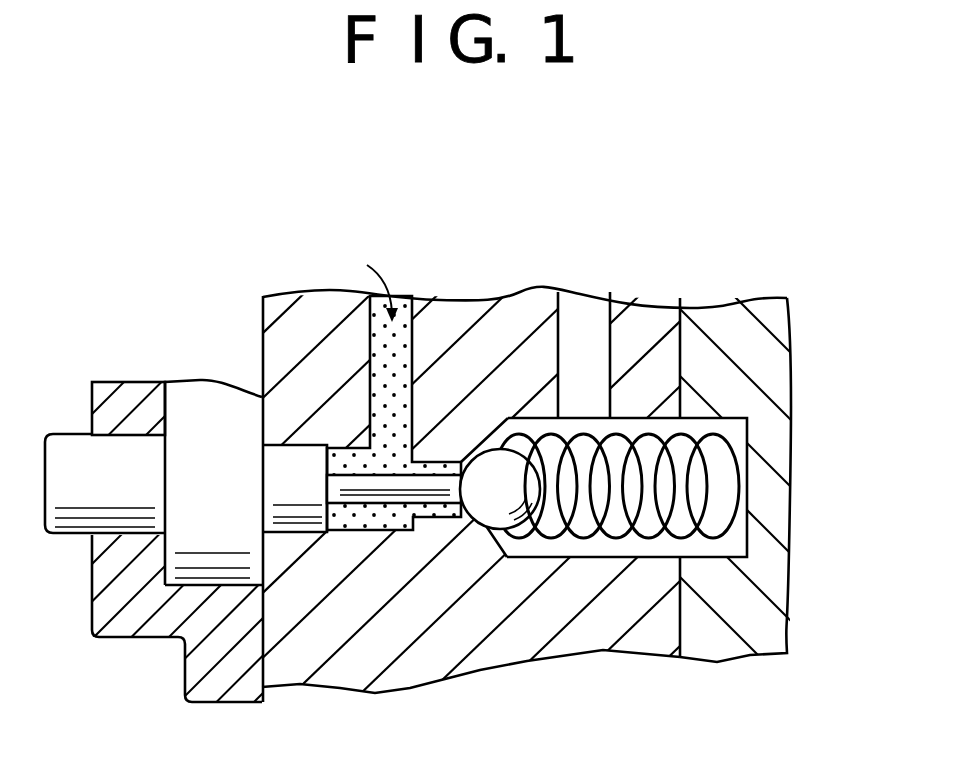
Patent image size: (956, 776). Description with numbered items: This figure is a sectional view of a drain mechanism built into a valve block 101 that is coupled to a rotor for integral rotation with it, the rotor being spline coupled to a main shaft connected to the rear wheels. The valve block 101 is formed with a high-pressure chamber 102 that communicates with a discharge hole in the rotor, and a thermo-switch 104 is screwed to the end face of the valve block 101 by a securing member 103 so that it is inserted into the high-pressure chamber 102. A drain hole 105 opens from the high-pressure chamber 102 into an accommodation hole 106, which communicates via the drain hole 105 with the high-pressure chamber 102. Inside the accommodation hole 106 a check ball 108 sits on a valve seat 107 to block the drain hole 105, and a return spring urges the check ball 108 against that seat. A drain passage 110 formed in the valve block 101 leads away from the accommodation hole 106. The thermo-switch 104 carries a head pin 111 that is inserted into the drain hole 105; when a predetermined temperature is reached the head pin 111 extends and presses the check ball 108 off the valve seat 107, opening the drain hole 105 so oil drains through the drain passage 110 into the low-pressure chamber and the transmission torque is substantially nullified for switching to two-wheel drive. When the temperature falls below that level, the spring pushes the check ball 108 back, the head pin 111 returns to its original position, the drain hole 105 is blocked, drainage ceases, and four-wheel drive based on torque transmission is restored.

The valve block 101 is at (608, 630).
The high-pressure chamber 102 is at (393, 522).
The plunger 103 is at (120, 625).
The thermo-switch 104 is at (202, 413).
The drain hole 105 is at (437, 465).
The accommodation hole 106 is at (662, 433).
The valve seat 107 is at (498, 527).
The check ball 108 is at (512, 467).
The drain passage 110 is at (583, 327).
The head pin 111 is at (363, 473).